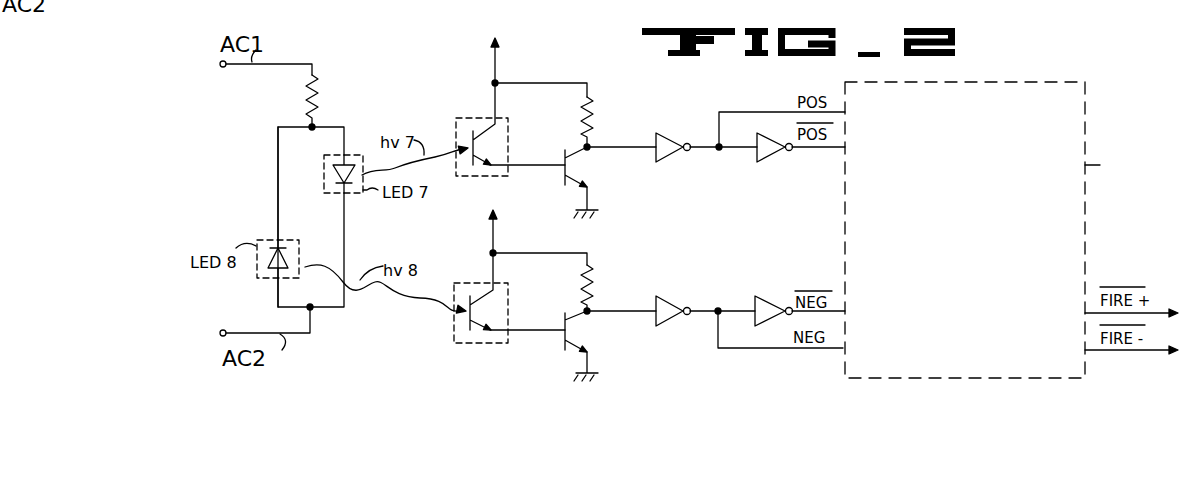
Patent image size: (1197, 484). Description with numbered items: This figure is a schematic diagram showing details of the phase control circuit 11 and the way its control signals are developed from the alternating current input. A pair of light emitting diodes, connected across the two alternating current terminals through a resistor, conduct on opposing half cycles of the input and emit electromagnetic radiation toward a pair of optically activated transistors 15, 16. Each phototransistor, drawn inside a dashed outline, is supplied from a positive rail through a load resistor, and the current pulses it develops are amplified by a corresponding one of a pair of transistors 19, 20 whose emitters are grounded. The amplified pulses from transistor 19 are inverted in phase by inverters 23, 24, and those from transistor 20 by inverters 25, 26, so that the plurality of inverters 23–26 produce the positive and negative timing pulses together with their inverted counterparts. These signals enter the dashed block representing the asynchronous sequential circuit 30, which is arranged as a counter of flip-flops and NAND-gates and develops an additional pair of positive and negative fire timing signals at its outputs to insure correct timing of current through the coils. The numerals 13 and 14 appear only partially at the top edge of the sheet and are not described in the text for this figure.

The phase control circuit 11 is at (1106, 86).
The element 13 is at (1147, 14).
The element 14 is at (921, 7).
The optically activated transistor 15 is at (477, 117).
The optically activated transistor 16 is at (455, 328).
The transistor 19 is at (565, 176).
The transistor 20 is at (565, 343).
The inverter 23 is at (672, 162).
The inverter 24 is at (768, 162).
The inverter 25 is at (676, 296).
The inverter 26 is at (772, 296).
The asynchronous sequential circuit 30 is at (1112, 169).